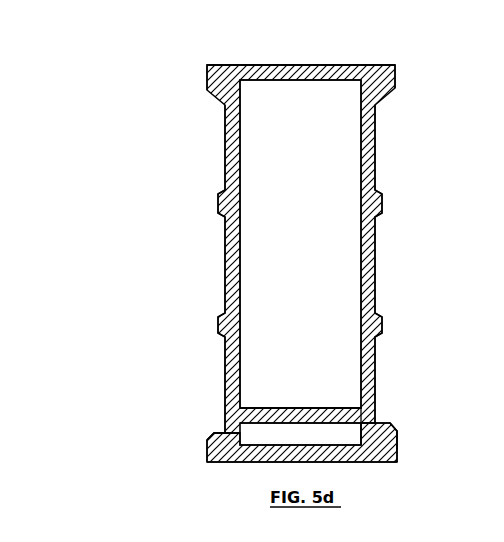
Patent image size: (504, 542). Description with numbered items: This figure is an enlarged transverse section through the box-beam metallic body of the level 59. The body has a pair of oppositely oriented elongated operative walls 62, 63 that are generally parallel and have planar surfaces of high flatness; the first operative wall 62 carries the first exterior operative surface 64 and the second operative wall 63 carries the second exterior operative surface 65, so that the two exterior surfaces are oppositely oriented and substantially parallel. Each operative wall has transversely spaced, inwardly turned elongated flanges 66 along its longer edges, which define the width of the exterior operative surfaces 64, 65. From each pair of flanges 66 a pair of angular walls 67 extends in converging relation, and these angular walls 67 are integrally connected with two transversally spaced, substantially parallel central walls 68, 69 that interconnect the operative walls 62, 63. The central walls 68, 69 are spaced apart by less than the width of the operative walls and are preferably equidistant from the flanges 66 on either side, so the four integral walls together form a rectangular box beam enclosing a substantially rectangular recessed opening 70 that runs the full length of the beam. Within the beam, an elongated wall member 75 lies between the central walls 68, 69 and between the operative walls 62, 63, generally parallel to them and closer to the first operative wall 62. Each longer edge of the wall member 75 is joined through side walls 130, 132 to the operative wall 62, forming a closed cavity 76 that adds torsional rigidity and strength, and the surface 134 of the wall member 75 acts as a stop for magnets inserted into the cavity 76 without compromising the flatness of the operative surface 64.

The level 59 is at (413, 128).
The first operative wall 62 is at (349, 463).
The second operative wall 63 is at (357, 66).
The first exterior operative surface 64 is at (266, 463).
The second exterior operative surface 65 is at (301, 63).
The inwardly turned elongated flanges 66 is at (204, 448).
The angular walls 67 is at (388, 419).
The central wall 68 is at (225, 233).
The central wall 69 is at (377, 243).
The recessed opening 70 is at (304, 178).
The elongated wall member 75 is at (323, 405).
The cavity 76 is at (250, 431).
The side wall 130 is at (384, 443).
The side wall 132 is at (220, 440).
The surface 134 is at (280, 432).